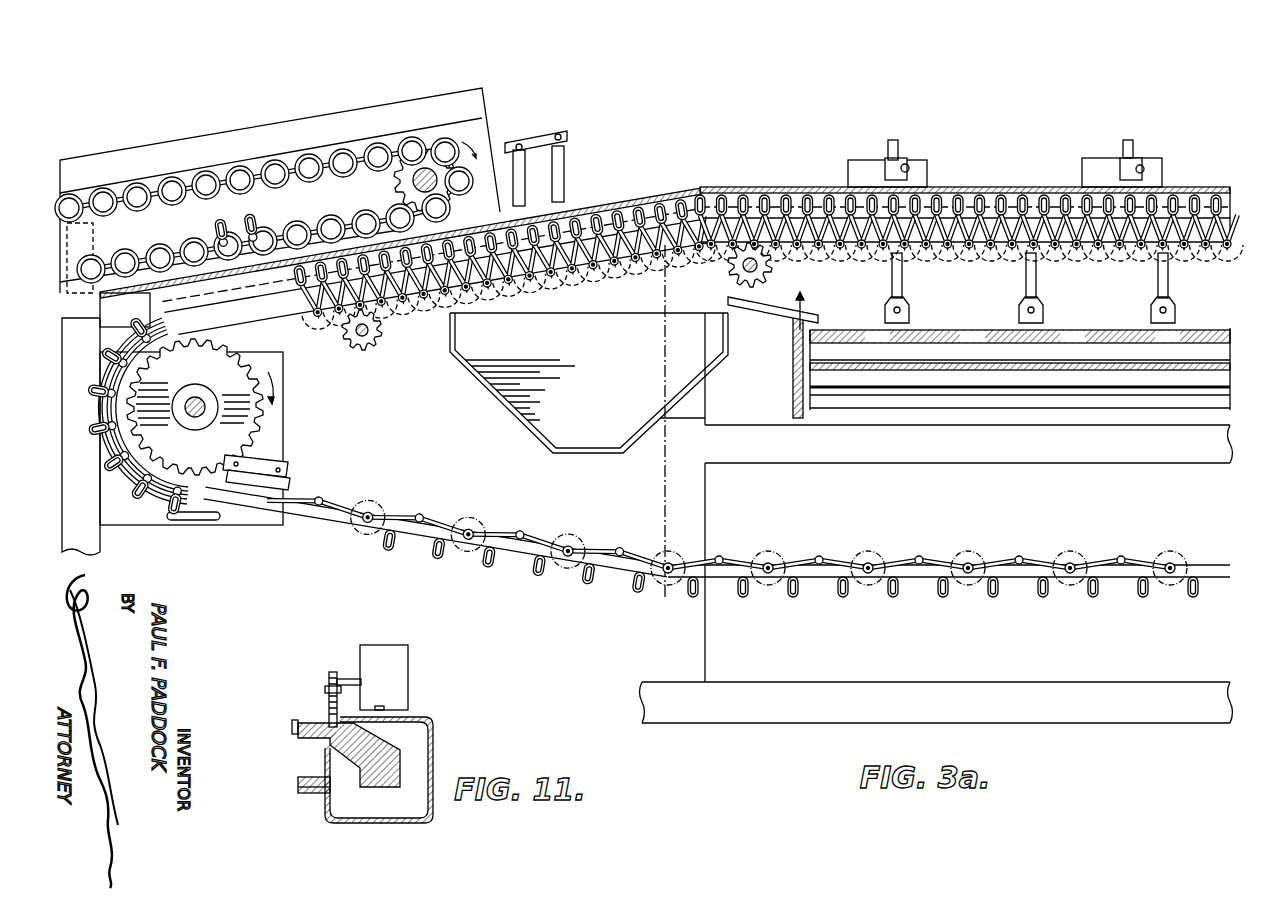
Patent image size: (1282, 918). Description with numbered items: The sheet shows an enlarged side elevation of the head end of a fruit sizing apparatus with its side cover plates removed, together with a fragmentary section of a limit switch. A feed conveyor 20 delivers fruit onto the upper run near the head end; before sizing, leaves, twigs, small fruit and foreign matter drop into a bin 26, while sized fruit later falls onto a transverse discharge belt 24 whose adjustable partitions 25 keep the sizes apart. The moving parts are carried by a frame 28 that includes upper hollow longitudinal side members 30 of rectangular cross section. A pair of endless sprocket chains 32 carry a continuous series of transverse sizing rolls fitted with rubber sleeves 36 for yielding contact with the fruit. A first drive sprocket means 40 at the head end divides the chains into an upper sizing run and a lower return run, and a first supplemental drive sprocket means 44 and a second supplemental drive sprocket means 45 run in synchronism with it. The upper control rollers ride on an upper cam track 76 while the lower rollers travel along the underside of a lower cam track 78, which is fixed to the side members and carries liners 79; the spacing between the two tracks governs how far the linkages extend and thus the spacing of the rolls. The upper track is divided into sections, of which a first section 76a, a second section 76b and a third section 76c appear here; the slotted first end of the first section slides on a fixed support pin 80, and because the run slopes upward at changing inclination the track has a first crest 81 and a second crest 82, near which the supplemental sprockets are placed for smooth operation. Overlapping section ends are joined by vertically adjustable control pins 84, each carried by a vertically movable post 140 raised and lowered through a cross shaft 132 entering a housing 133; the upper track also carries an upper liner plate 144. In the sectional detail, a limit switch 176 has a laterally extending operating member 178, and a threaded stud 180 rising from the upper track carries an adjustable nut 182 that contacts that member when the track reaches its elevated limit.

In FIG. 3A, the feed conveyor 20 is at (265, 183).
In FIG. 3A, the transverse discharge belt 24 is at (1055, 330).
In FIG. 3A, the adjustable partitions 25 is at (1020, 302).
In FIG. 3A, the bin 26 is at (589, 383).
In FIG. 3A, the frame 28 is at (662, 503).
In FIG. 3A, the upper hollow longitudinal side members 30 is at (174, 312).
In FIG. 11, the upper hollow longitudinal side members 30 is at (437, 738).
In FIG. 3A, the endless sprocket chains 32 is at (945, 550).
In FIG. 3A, the rubber sleeves 36 is at (480, 525).
In FIG. 3A, the first drive sprocket means 40 is at (262, 422).
In FIG. 3A, the first supplemental drive sprocket means 44 is at (356, 352).
In FIG. 3A, the second supplemental drive sprocket means 45 is at (773, 270).
In FIG. 11, the upper cam track 76 is at (308, 745).
In FIG. 3A, the first upper cam track section 76a is at (770, 200).
In FIG. 3A, the second upper cam track section 76b is at (998, 210).
In FIG. 3A, the third upper cam track section 76c is at (1180, 212).
In FIG. 3A, the lower cam track 78 is at (254, 330).
In FIG. 11, the lower cam track 78 is at (298, 790).
In FIG. 11, the liners 79 is at (310, 795).
In FIG. 3A, the fixed support pin 80 is at (725, 202).
In FIG. 3A, the first crest 81 is at (316, 262).
In FIG. 3A, the second crest 82 is at (700, 196).
In FIG. 3A, the control pins 84 is at (912, 180).
In FIG. 3A, the cross shafts 132 is at (912, 167).
In FIG. 3A, the housings 133 is at (902, 160).
In FIG. 3A, the vertically movable post 140 is at (893, 140).
In FIG. 11, the upper liner plate 144 is at (310, 728).
In FIG. 11, the limit switch 176 is at (410, 686).
In FIG. 11, the operating member 178 is at (348, 678).
In FIG. 11, the adjusting screw 180 is at (333, 671).
In FIG. 11, the adjustable nut 182 is at (326, 688).